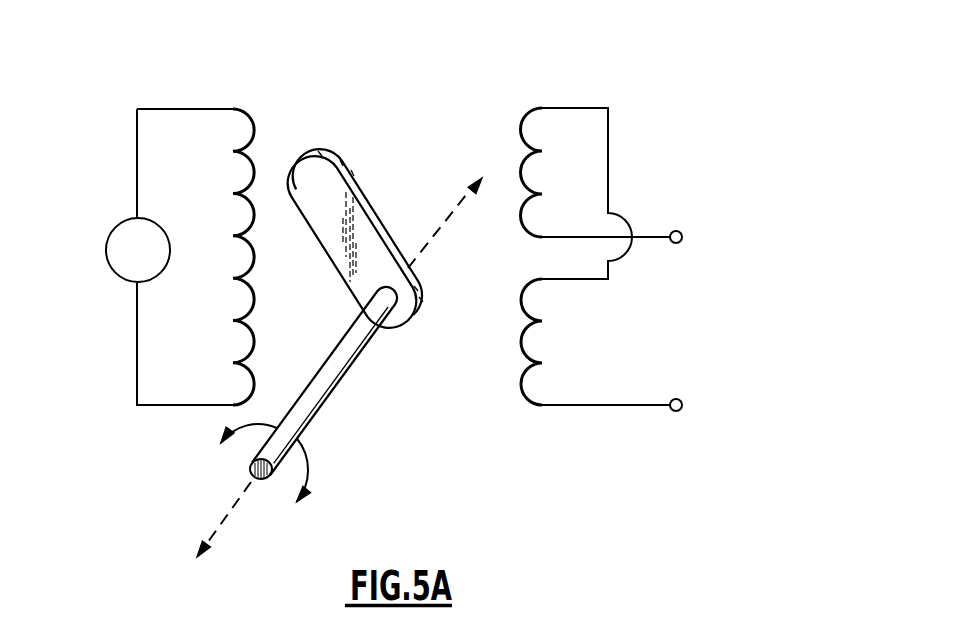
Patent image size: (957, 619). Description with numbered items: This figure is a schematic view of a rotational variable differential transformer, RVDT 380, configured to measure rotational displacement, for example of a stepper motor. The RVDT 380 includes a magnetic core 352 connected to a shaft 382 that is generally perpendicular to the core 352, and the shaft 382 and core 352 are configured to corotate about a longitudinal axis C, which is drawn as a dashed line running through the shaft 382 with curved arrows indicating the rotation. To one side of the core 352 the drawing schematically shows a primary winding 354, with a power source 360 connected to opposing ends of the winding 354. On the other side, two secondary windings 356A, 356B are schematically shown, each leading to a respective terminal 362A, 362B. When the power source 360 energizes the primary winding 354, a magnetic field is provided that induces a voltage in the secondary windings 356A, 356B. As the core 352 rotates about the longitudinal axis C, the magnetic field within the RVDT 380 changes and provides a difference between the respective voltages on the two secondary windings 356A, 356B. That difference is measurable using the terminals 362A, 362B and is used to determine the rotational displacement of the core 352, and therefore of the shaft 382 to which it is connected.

The rotational variable differential transformer 380 is at (700, 40).
The primary winding 354 is at (252, 121).
The power source 360 is at (108, 243).
The secondary winding 356A is at (521, 120).
The secondary winding 356B is at (520, 390).
The terminal 362A is at (682, 233).
The terminal 362B is at (682, 401).
The magnetic core 352 is at (367, 198).
The shaft 382 is at (327, 405).
The longitudinal axis C is at (225, 517).